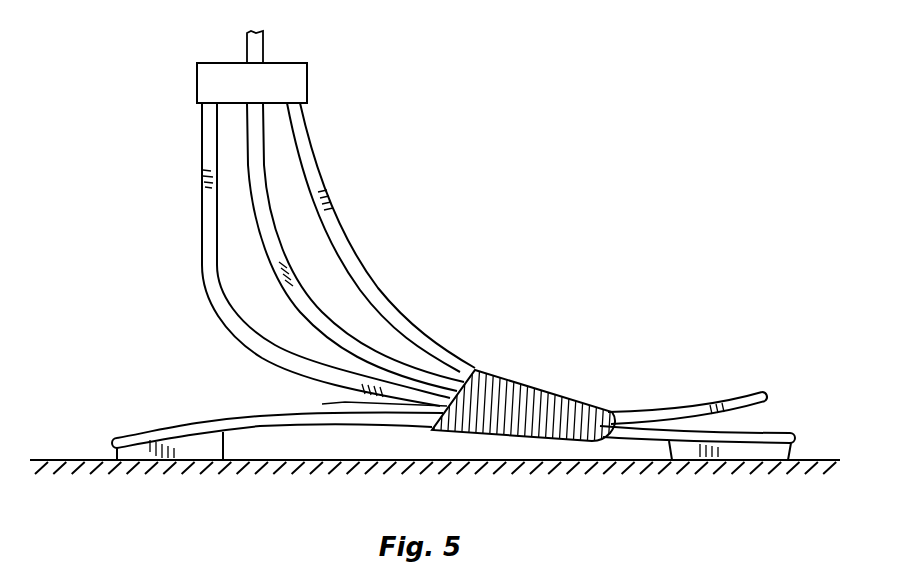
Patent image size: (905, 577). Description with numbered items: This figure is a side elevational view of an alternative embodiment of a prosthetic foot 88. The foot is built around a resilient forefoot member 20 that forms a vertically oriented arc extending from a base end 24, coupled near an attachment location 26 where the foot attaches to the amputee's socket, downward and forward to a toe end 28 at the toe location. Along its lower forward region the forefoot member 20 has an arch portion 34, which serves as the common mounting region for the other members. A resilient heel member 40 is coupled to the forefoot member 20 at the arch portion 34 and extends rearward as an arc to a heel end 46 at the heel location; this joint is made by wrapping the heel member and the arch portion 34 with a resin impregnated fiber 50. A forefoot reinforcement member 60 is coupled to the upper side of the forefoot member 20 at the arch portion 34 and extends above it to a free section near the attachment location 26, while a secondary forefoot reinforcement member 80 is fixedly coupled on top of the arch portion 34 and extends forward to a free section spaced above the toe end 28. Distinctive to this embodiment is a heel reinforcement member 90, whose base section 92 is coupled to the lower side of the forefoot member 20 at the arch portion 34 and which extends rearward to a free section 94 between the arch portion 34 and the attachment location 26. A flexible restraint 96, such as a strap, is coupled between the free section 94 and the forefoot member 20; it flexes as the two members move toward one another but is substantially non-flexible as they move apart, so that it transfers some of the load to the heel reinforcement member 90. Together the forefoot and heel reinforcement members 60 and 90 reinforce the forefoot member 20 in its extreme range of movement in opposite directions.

The prosthetic foot 88 is at (75, 272).
The attachment location 26 is at (266, 35).
The flexible restraint 96 is at (197, 78).
The free section 94 is at (205, 110).
The base end 24 is at (253, 117).
The heel reinforcement member 90 is at (201, 232).
The forefoot member 20 is at (266, 247).
The forefoot reinforcement member 60 is at (358, 256).
The arch portion 34 is at (428, 380).
The base section 92 is at (322, 404).
The heel member 40 is at (227, 418).
The heel end 46 is at (117, 438).
The resin impregnated fiber 50 is at (515, 383).
The secondary forefoot reinforcement member 80 is at (690, 407).
The toe end 28 is at (792, 431).